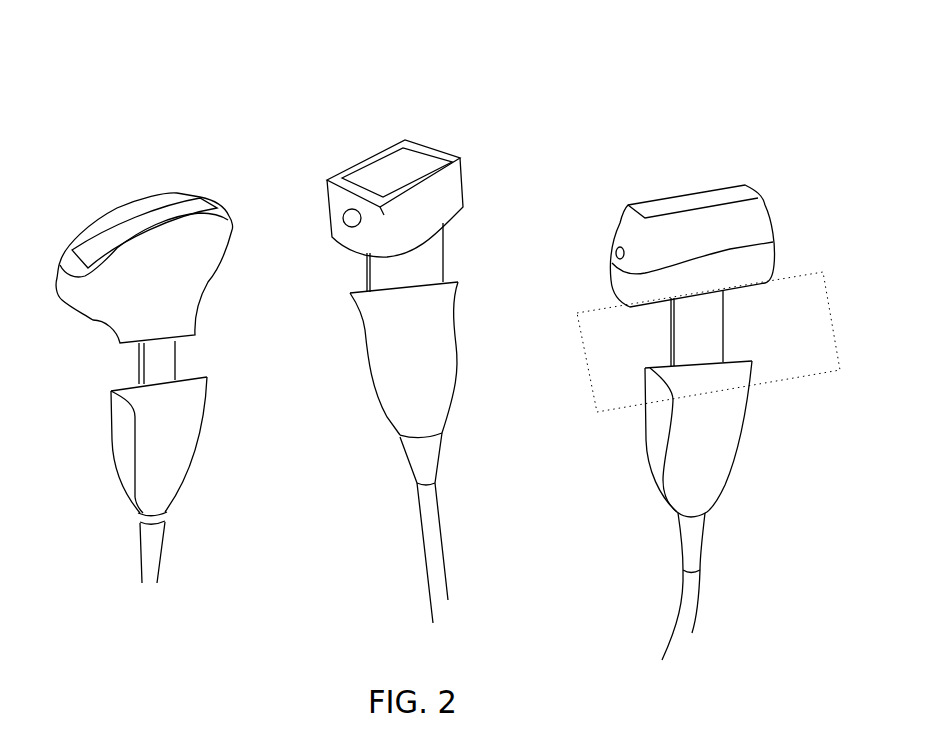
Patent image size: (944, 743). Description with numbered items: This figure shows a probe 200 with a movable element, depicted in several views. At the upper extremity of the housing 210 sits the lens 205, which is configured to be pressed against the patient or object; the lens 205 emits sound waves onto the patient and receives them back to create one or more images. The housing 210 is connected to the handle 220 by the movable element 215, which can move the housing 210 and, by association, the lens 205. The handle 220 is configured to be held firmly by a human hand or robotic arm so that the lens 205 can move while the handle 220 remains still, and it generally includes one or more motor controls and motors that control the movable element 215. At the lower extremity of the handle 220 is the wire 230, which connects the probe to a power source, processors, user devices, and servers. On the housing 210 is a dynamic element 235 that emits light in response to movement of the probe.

The probe 200 is at (460, 61).
The lens 205 is at (410, 155).
The housing 210 is at (452, 198).
The movable element 215 is at (432, 255).
The handle 220 is at (440, 368).
The wire 230 is at (433, 520).
The dynamic element 235 is at (348, 225).